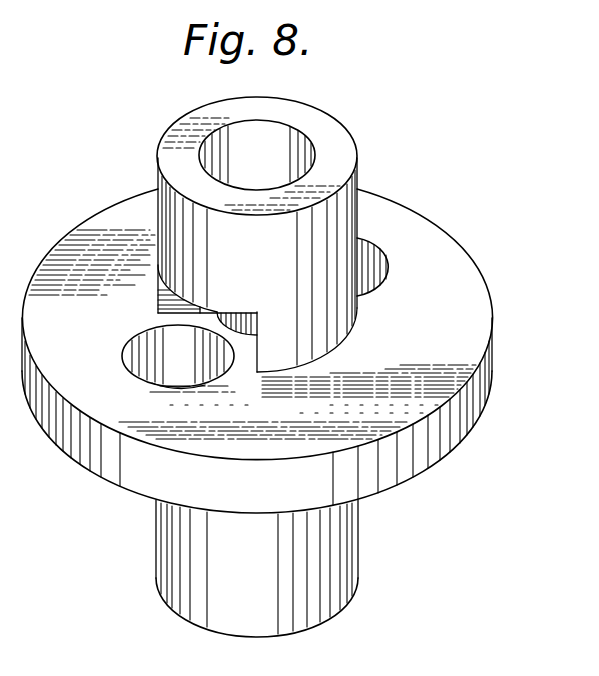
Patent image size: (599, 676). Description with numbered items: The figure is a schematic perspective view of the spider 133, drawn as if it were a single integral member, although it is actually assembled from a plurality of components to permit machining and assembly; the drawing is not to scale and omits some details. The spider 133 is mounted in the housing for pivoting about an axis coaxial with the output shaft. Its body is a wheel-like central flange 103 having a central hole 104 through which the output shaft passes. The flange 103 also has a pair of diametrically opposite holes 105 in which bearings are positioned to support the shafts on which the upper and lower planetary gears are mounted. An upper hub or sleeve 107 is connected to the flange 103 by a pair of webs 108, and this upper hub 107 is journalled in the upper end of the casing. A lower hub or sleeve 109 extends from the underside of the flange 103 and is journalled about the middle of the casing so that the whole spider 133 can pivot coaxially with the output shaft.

The central flange 103 is at (477, 262).
The central hole 104 is at (252, 333).
The diametrically opposite holes 105 is at (155, 338).
The upper hub 107 is at (359, 197).
The webs 108 is at (158, 287).
The lower hub 109 is at (180, 537).
The spider 133 is at (480, 392).